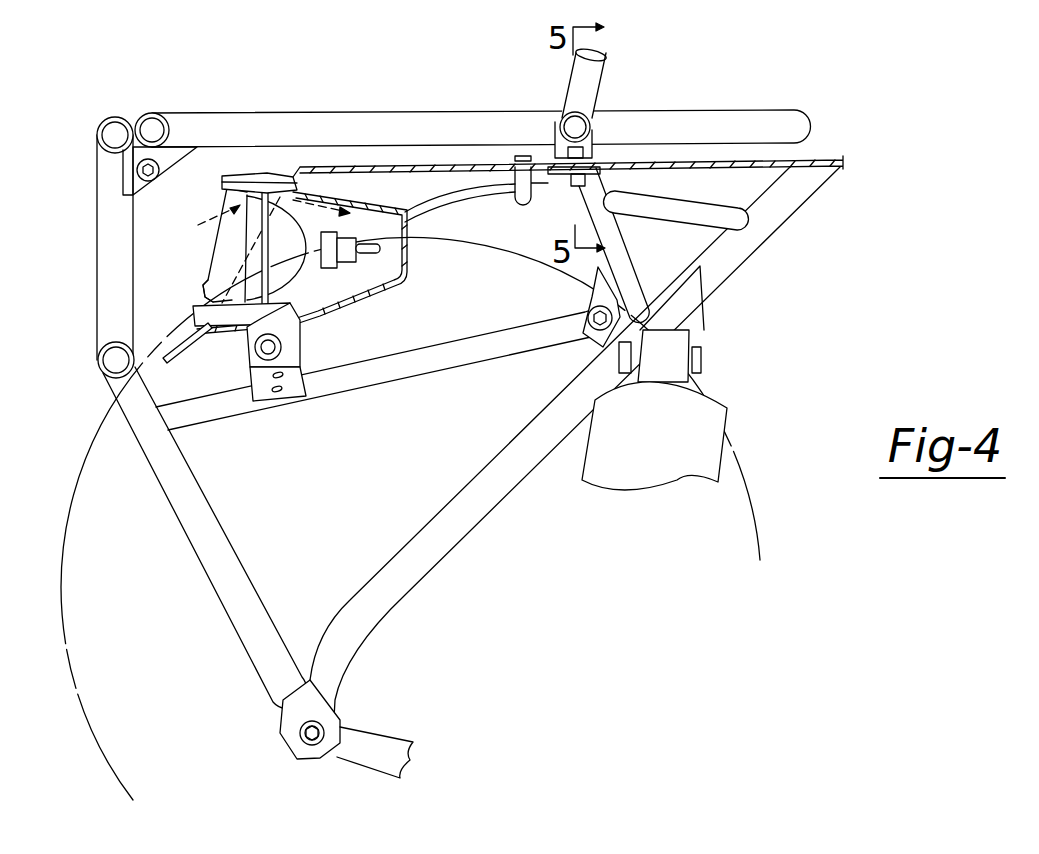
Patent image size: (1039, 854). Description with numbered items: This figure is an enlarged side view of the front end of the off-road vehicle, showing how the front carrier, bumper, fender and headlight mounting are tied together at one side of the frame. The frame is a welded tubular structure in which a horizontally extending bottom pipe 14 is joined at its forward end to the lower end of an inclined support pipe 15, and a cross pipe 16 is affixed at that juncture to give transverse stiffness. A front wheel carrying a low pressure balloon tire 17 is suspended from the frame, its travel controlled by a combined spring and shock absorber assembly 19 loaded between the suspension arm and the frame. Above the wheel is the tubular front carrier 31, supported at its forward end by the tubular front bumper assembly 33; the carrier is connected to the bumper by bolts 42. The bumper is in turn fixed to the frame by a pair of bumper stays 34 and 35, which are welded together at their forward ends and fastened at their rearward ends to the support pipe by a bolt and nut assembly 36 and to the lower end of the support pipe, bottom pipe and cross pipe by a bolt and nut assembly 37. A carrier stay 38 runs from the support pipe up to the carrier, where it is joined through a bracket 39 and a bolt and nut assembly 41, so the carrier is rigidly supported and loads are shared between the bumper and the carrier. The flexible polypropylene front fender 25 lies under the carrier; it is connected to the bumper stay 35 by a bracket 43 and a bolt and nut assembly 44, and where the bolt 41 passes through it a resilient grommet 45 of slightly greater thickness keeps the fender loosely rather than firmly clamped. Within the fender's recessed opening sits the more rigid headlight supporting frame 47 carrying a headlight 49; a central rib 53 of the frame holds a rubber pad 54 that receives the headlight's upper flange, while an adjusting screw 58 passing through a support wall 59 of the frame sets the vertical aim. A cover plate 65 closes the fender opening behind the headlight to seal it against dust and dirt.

The bottom pipe 14 is at (385, 736).
The support pipe 15 is at (460, 497).
The cross pipe 16 is at (320, 754).
The balloon tire 17 is at (145, 683).
The combined spring and shock absorber assembly 19 is at (722, 429).
The front fender 25 is at (460, 160).
The front carrier 31 is at (405, 112).
The front bumper assembly 33 is at (97, 262).
The bumper stay 34 is at (233, 624).
The bumper stay 35 is at (453, 365).
The bolt and nut assembly 36 is at (600, 316).
The bolt and nut assembly 37 is at (300, 733).
The carrier stay 38 is at (640, 252).
The bracket 39 is at (598, 153).
The bolt and nut assembly 41 is at (578, 186).
The bolt 42 is at (150, 181).
The bracket 43 is at (294, 368).
The bolt and nut assembly 44 is at (282, 346).
The resilient grommet 45 is at (598, 152).
The headlight supporting frame 47 is at (232, 171).
The headlight 49 is at (242, 243).
The rib 53 is at (246, 174).
The rubber pad 54 is at (263, 178).
The adjusting screw 58 is at (228, 300).
The support wall 59 is at (236, 334).
The cover plate 65 is at (410, 275).